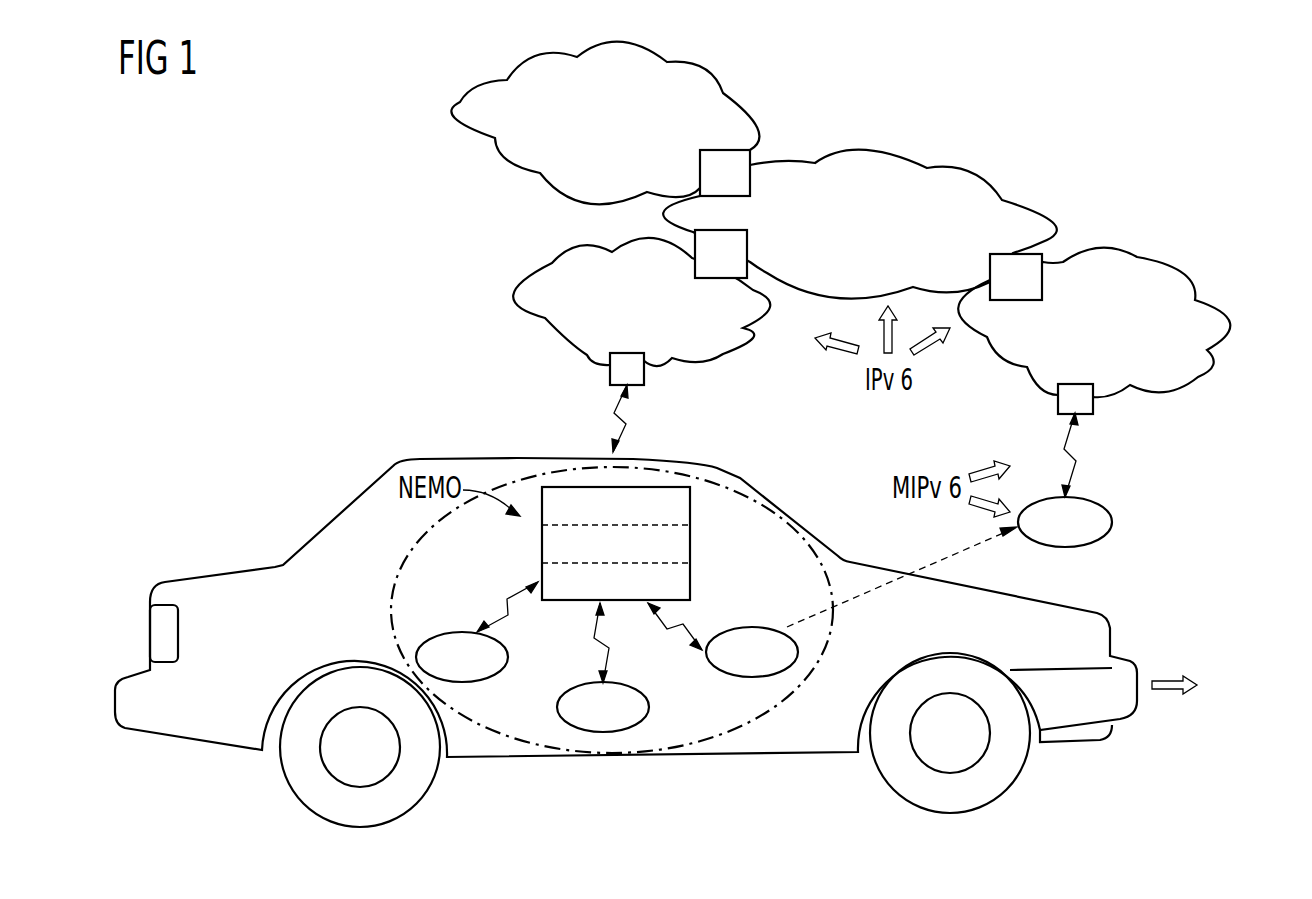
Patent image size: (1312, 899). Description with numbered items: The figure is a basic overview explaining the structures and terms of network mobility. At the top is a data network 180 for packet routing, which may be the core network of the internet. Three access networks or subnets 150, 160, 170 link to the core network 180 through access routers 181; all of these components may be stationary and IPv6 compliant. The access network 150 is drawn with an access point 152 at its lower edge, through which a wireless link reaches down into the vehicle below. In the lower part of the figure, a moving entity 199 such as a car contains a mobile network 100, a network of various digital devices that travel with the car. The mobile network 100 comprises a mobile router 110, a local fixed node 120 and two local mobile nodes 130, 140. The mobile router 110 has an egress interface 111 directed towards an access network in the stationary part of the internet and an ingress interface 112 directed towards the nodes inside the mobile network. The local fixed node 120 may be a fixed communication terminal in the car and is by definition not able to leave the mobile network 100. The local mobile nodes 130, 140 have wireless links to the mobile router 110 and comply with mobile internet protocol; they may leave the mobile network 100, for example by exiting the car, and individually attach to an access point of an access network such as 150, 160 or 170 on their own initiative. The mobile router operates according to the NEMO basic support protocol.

The mobile network 100 is at (392, 612).
The mobile router 110 is at (634, 543).
The egress interface 111 is at (680, 510).
The ingress interface 112 is at (550, 573).
The local fixed node 120 is at (508, 656).
The local mobile node 130 is at (557, 708).
The local mobile node 140 is at (752, 628).
The access network 150 is at (718, 362).
The access router 152 is at (614, 376).
The access network 160 is at (470, 108).
The access network 170 is at (1220, 328).
The data network 180 is at (879, 160).
The access router 181 is at (743, 160).
The moving entity 199 is at (326, 536).